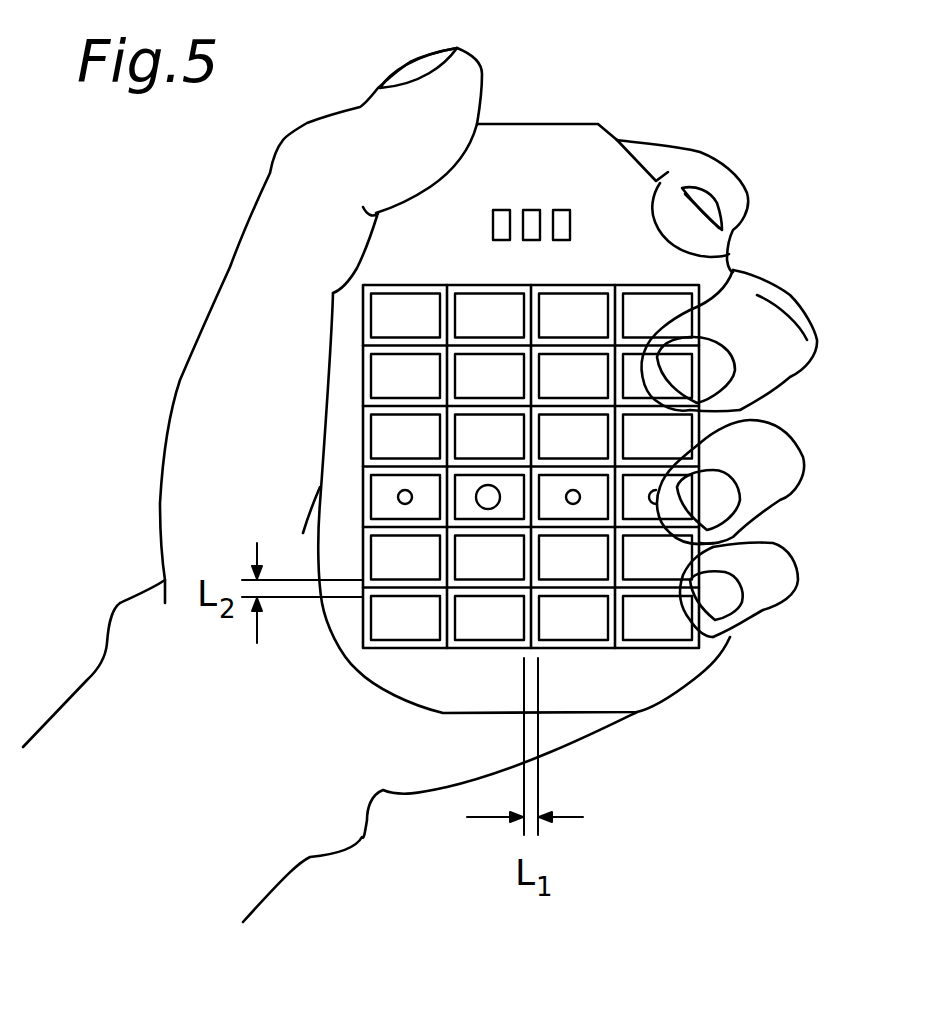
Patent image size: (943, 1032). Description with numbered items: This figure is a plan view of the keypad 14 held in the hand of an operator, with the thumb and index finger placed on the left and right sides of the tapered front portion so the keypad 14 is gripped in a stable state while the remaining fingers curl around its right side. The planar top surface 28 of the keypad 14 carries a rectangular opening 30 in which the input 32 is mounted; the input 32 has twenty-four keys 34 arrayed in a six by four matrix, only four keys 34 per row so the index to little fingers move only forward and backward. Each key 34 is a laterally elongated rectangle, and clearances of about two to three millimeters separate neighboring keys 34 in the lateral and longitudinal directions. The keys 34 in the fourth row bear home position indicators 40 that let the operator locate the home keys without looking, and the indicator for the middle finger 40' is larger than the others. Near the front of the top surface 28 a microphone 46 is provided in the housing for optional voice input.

The keypad 14 is at (597, 123).
The microphone 46 is at (537, 208).
The input 32 is at (707, 279).
The top surface 28 is at (747, 415).
The rectangular opening 30 is at (380, 525).
The key 34 is at (401, 629).
The home position indicator 40 is at (237, 455).
The indicator for the middle finger 40' is at (299, 397).